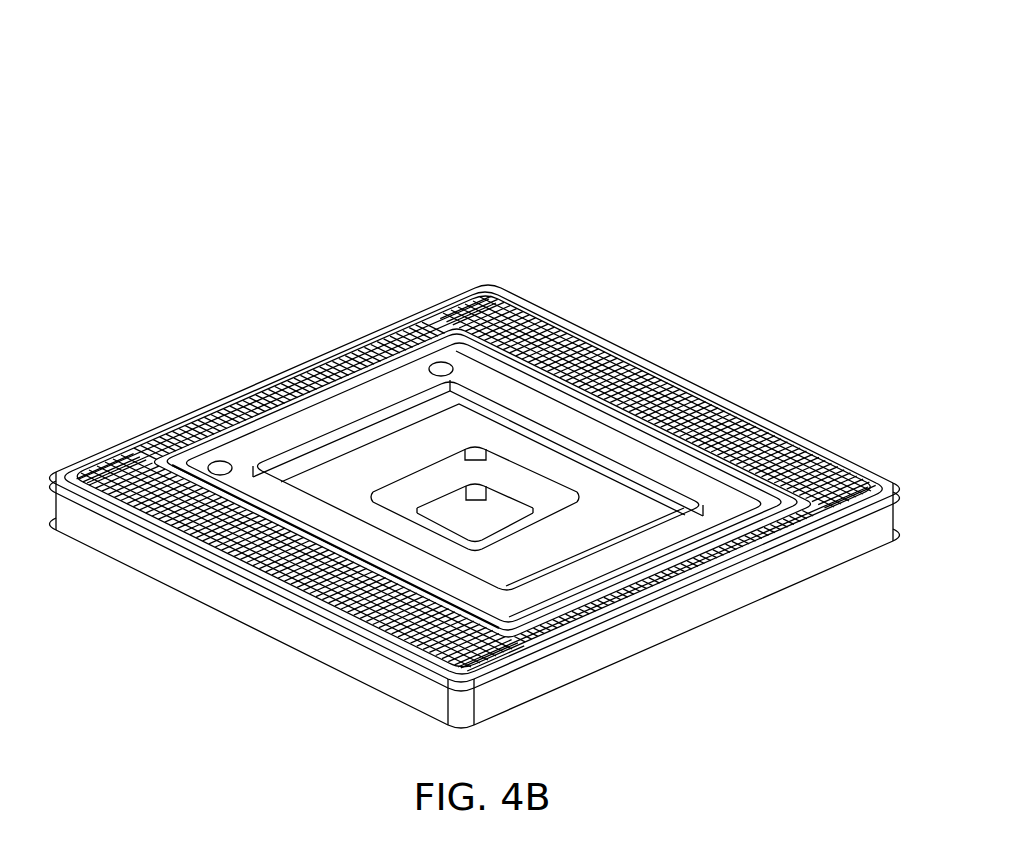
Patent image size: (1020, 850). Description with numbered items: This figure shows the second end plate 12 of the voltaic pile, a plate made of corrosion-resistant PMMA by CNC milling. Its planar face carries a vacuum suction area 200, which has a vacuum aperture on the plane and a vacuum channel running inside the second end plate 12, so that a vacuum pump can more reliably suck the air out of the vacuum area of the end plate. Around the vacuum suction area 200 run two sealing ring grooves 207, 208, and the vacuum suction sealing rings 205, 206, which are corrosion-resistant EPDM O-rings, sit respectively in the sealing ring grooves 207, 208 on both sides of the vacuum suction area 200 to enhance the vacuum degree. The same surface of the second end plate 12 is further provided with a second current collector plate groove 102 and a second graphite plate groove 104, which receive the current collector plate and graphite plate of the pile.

The second end plate 12 is at (473, 118).
The vacuum suction area 200 is at (283, 592).
The sealing ring groove 207 is at (468, 288).
The vacuum suction sealing ring 205 is at (505, 300).
The vacuum suction sealing ring 206 is at (545, 338).
The sealing ring groove 208 is at (600, 345).
The second graphite plate groove 104 is at (630, 480).
The second current collector plate groove 102 is at (560, 498).